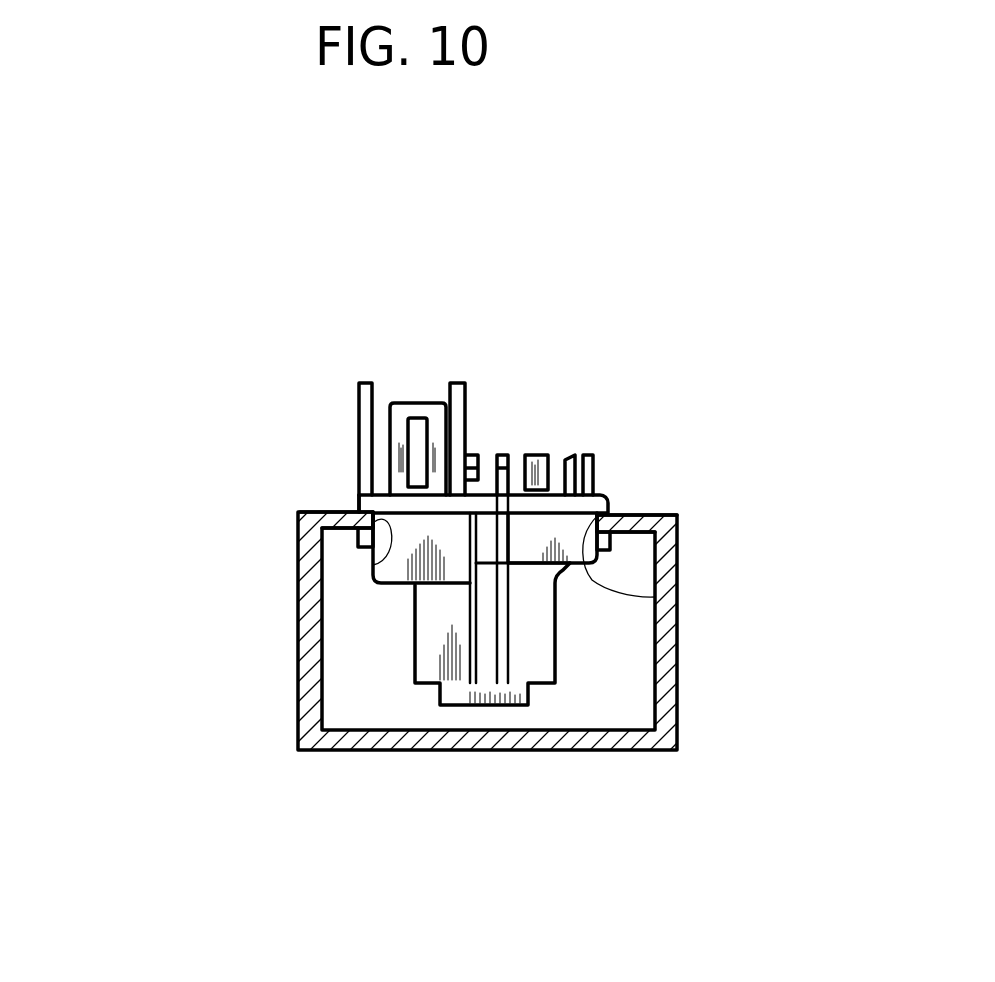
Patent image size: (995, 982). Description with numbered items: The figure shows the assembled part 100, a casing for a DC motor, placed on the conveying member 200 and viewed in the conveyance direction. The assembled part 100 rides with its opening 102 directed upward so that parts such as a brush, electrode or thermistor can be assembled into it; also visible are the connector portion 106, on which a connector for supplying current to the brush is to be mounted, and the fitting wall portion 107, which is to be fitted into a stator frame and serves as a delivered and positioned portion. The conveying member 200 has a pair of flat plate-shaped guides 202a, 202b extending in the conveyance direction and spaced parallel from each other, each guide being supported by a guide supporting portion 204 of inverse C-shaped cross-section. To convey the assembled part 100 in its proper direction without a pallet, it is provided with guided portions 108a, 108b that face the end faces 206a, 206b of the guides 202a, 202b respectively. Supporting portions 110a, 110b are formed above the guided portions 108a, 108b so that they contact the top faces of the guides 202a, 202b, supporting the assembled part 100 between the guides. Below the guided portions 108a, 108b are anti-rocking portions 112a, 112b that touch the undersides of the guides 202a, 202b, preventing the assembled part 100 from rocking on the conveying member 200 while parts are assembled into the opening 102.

The assembled part 100 is at (498, 421).
The opening 102 is at (536, 455).
The connector portion 106 is at (375, 383).
The fitting wall portion 107 is at (595, 455).
The guided portion 108a is at (606, 515).
The guided portion 108b is at (357, 495).
The supporting portion 110a is at (608, 503).
The supporting portion 110b is at (357, 493).
The anti-rocking portion 112a is at (606, 538).
The anti-rocking portion 112b is at (358, 531).
The conveying member 200 is at (323, 755).
The guide 202a is at (650, 516).
The guide 202b is at (328, 512).
The guide supporting portion 204 is at (670, 703).
The end face 206a is at (655, 597).
The end face 206b is at (373, 565).